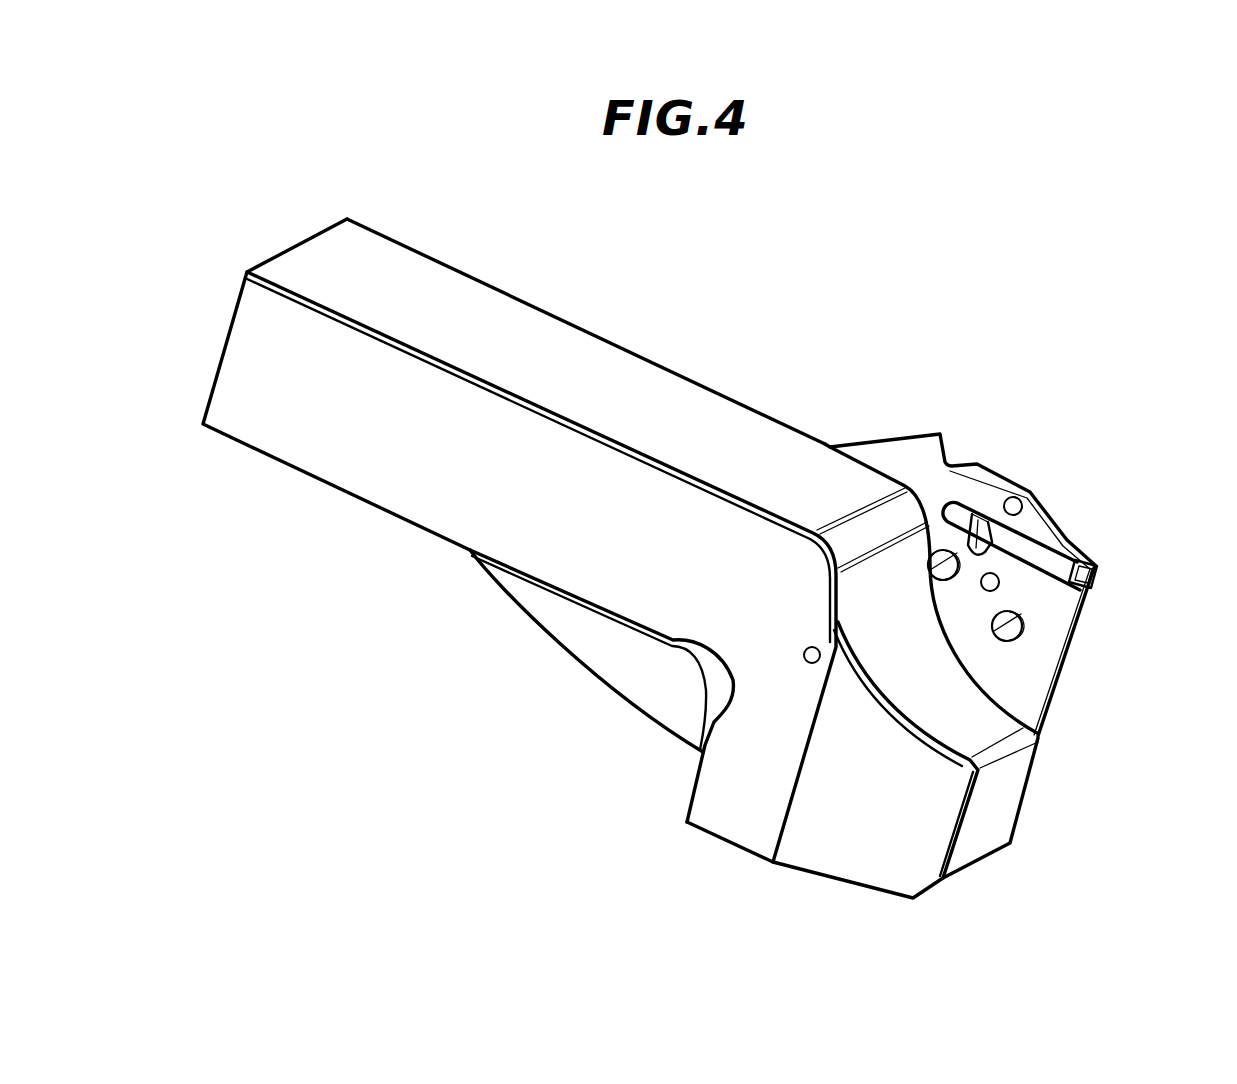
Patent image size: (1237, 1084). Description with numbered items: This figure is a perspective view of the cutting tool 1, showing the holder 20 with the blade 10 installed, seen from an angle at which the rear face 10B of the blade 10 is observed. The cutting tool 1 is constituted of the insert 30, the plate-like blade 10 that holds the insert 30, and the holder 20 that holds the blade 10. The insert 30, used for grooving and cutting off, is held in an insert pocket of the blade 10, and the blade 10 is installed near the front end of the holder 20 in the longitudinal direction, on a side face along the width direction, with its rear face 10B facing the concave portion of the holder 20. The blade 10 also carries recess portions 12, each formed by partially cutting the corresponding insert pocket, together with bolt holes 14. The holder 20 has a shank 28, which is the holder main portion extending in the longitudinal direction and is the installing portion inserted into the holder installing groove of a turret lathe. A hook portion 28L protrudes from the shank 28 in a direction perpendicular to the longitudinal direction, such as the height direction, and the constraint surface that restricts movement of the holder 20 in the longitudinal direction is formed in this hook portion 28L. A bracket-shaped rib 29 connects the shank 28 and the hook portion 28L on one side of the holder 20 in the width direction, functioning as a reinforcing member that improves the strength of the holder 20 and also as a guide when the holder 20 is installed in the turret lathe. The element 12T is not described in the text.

The cutting tool 1 is at (703, 558).
The blade 10 is at (1005, 565).
The rear face 10B is at (1033, 677).
The recess portion 12 is at (983, 562).
The insert pocket slot 12T is at (1030, 517).
The bolt hole 14 is at (952, 558).
The holder 20 is at (620, 558).
The shank 28 is at (422, 443).
The rib 29 is at (608, 657).
The hook portion 28L is at (720, 792).
The insert 30 is at (1057, 570).